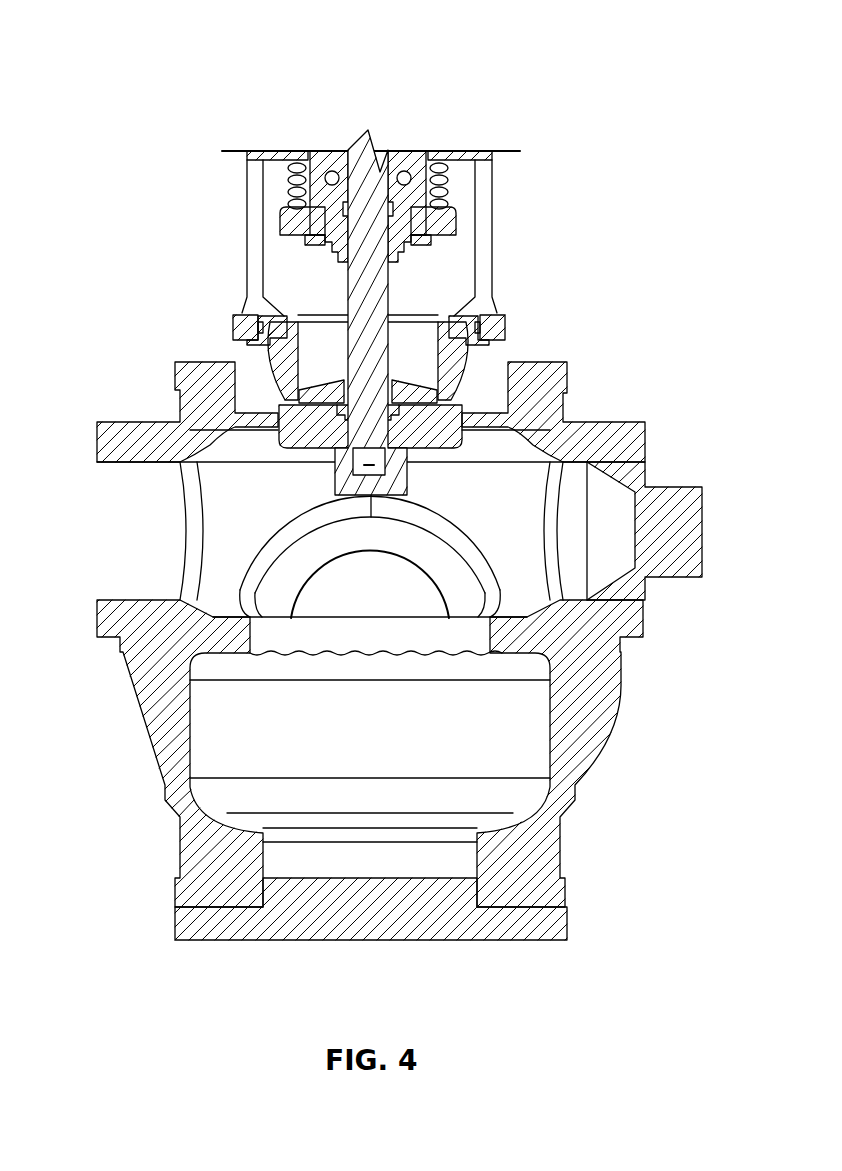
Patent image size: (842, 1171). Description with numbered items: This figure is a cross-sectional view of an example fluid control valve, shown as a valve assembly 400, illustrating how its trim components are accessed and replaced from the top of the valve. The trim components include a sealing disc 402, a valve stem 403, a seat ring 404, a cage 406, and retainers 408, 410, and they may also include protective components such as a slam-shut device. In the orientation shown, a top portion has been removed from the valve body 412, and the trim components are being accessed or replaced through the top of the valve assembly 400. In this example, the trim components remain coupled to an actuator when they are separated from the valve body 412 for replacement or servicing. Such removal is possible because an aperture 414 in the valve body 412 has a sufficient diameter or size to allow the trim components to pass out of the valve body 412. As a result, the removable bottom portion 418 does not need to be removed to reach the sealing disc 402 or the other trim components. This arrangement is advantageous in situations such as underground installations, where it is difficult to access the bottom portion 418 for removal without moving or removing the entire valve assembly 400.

The valve assembly 400 is at (168, 98).
The sealing disc 402 is at (512, 427).
The valve stem 403 is at (365, 288).
The seat ring 404 is at (255, 338).
The cage 406 is at (467, 252).
The retainer 408 is at (402, 380).
The retainer 410 is at (453, 407).
The valve body 412 is at (600, 713).
The aperture 414 is at (227, 390).
The removable bottom portion 418 is at (333, 920).